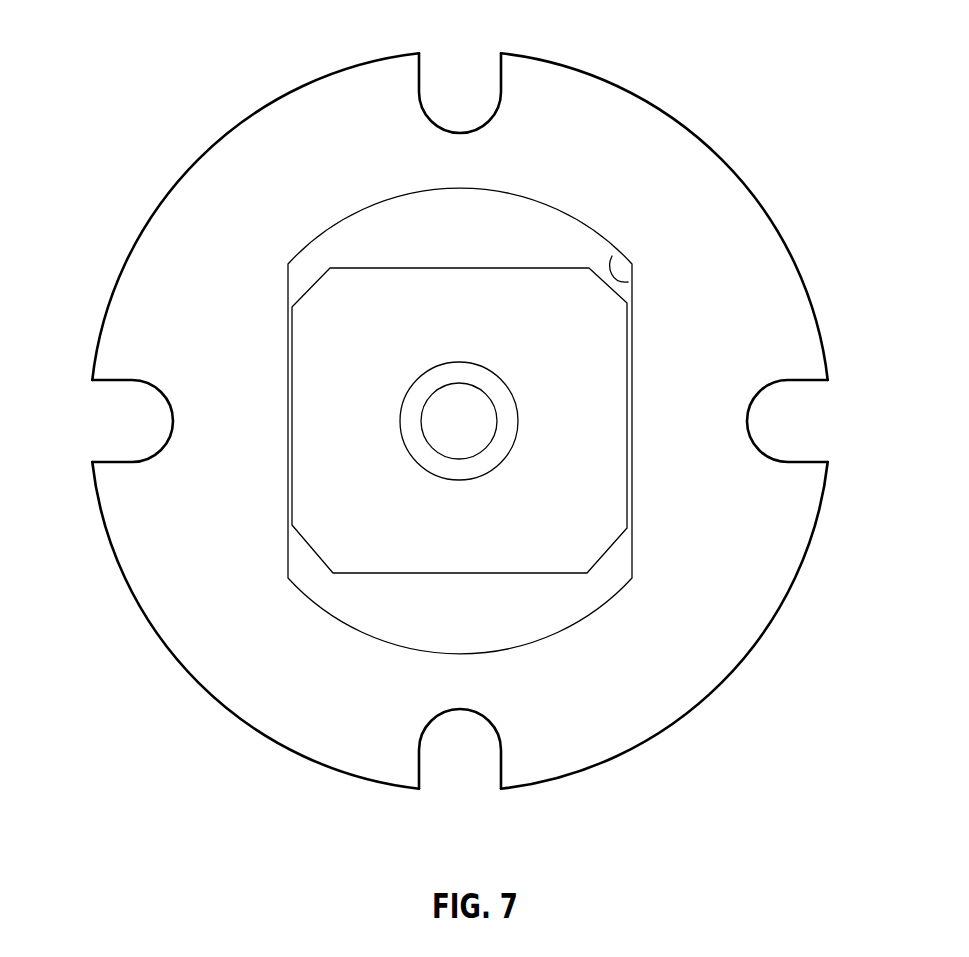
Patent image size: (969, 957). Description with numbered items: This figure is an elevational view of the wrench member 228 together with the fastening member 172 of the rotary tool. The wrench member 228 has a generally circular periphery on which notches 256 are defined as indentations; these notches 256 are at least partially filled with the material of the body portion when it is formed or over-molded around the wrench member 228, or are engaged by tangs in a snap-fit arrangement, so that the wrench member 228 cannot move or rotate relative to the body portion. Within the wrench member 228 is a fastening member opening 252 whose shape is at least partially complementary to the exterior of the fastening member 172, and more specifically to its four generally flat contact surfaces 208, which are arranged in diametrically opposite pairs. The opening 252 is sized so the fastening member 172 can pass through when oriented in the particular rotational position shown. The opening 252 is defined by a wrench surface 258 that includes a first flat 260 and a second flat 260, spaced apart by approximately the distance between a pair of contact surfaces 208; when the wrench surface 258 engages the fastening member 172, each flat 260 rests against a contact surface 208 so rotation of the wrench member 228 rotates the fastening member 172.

The wrench member 228 is at (205, 222).
The notches 256 is at (420, 86).
The fastening member opening 252 is at (350, 622).
The fastening member 172 is at (368, 372).
The contact surfaces 208 is at (483, 270).
The flats 260 is at (636, 368).
The wrench surface 258 is at (608, 252).